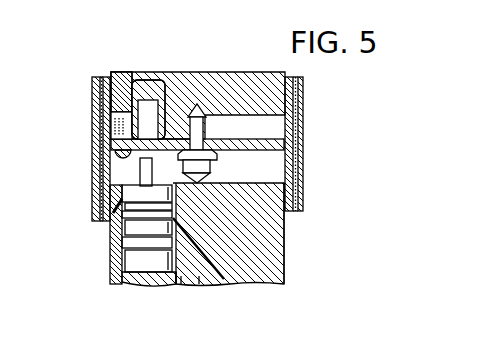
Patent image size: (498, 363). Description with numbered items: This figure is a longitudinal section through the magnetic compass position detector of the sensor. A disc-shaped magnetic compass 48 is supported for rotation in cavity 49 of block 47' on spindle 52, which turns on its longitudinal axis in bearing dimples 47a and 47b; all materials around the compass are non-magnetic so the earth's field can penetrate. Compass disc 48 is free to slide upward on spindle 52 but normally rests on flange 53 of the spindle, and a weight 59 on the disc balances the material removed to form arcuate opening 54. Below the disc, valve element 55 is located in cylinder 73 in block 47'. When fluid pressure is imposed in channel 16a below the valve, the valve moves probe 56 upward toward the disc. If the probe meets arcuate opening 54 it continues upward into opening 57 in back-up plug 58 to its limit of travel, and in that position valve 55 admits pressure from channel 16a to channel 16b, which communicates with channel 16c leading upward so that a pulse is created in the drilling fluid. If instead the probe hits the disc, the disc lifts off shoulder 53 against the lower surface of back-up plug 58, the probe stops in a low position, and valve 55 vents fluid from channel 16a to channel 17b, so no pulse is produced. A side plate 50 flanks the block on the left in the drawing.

The channel 16a is at (175, 279).
The channel 16b is at (118, 217).
The channel 16c is at (100, 78).
The channel 17b is at (220, 276).
The block 47' is at (315, 236).
The bearing dimple 47a is at (206, 112).
The bearing dimple 47b is at (206, 186).
The magnetic compass 48 is at (249, 139).
The cavity 49 is at (263, 178).
The side plate 50 is at (93, 102).
The spindle 52 is at (199, 284).
The flange 53 is at (181, 284).
The arcuate opening 54 is at (168, 112).
The valve element 55 is at (138, 256).
The probe 56 is at (145, 169).
The opening 57 is at (151, 106).
The back-up plug 58 is at (137, 80).
The weight 59 is at (117, 159).
The cylinder 73 is at (145, 270).